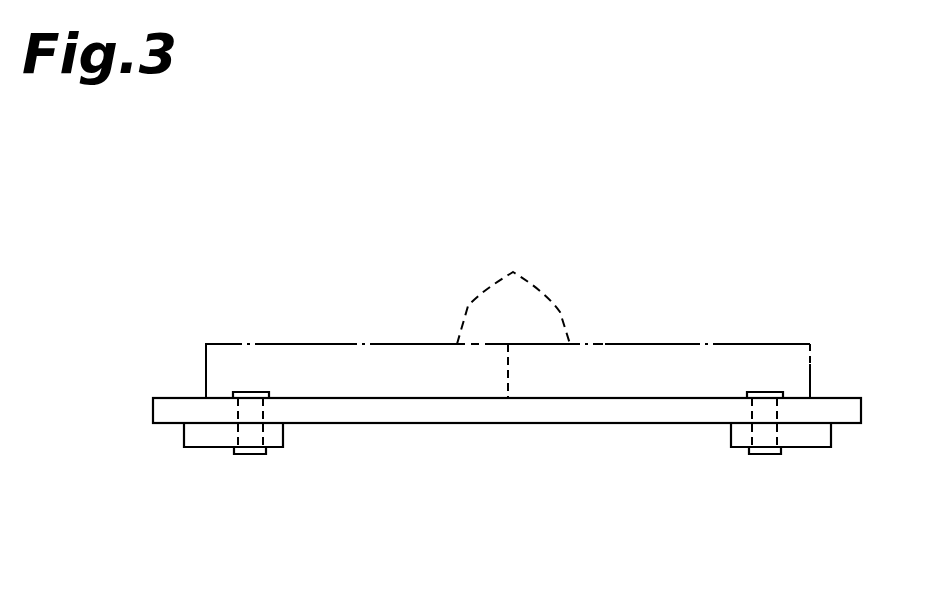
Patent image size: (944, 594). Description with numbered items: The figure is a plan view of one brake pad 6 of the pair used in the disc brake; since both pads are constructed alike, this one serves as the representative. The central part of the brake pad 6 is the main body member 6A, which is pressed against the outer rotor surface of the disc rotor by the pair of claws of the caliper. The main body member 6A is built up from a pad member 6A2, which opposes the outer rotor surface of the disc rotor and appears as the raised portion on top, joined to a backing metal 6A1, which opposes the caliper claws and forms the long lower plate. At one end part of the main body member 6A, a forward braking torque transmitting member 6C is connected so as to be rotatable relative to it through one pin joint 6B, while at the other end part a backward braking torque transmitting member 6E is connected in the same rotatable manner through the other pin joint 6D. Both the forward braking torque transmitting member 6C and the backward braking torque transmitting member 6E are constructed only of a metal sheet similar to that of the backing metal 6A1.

The brake pad 6 is at (700, 327).
The main body member 6A is at (498, 427).
The backing metal 6A1 is at (602, 425).
The pad member 6A2 is at (513, 271).
The pin joint 6B is at (245, 454).
The forward braking torque transmitting member 6C is at (208, 447).
The pin joint 6D is at (762, 454).
The backward braking torque transmitting member 6E is at (803, 447).